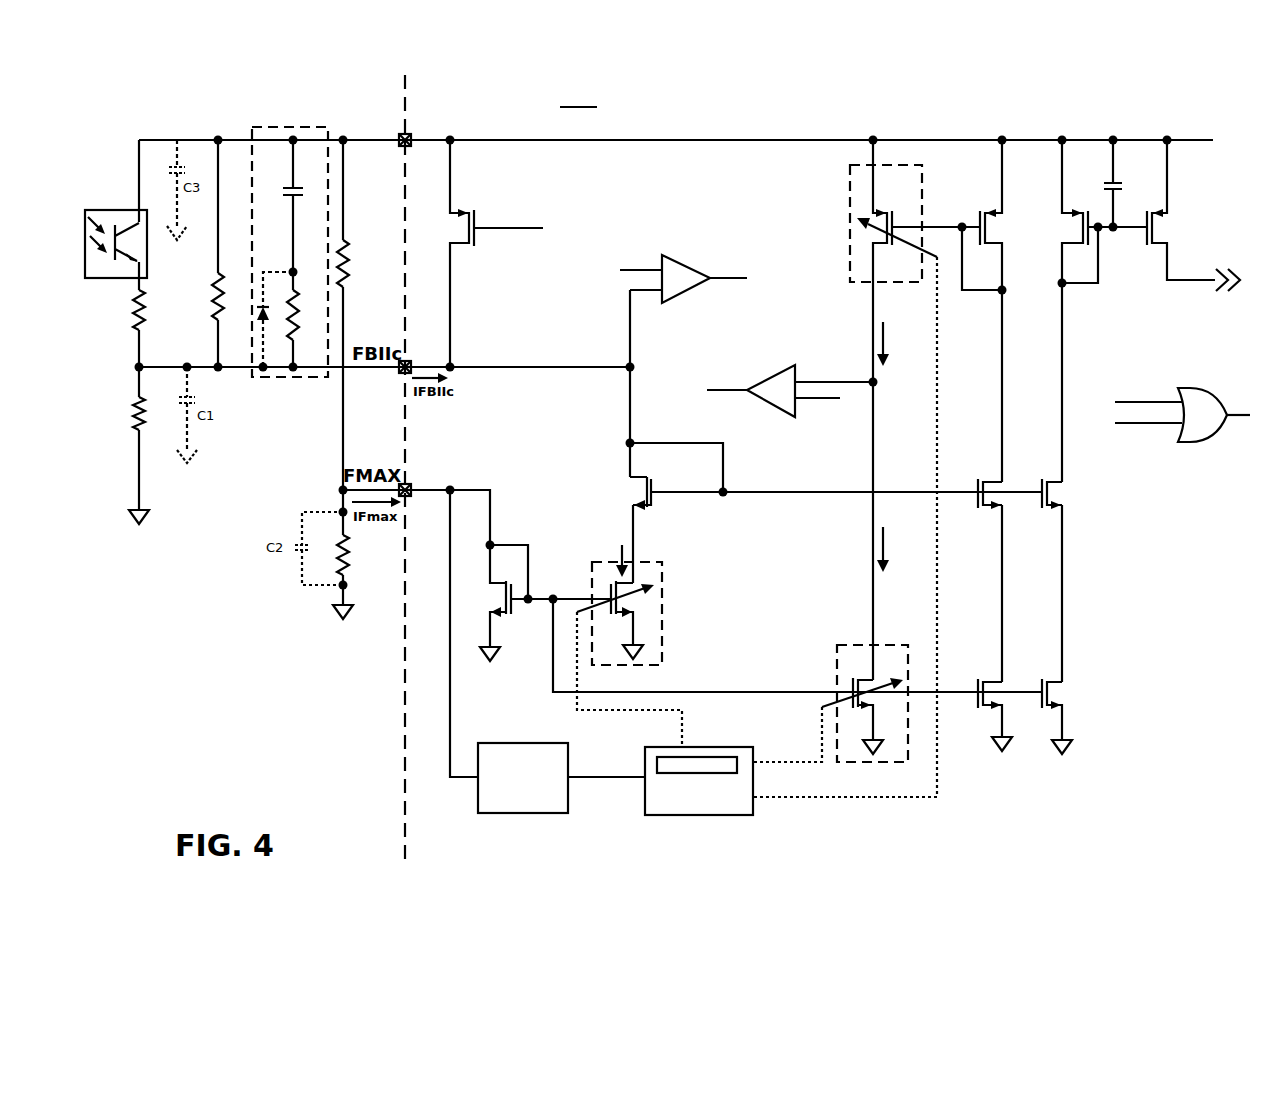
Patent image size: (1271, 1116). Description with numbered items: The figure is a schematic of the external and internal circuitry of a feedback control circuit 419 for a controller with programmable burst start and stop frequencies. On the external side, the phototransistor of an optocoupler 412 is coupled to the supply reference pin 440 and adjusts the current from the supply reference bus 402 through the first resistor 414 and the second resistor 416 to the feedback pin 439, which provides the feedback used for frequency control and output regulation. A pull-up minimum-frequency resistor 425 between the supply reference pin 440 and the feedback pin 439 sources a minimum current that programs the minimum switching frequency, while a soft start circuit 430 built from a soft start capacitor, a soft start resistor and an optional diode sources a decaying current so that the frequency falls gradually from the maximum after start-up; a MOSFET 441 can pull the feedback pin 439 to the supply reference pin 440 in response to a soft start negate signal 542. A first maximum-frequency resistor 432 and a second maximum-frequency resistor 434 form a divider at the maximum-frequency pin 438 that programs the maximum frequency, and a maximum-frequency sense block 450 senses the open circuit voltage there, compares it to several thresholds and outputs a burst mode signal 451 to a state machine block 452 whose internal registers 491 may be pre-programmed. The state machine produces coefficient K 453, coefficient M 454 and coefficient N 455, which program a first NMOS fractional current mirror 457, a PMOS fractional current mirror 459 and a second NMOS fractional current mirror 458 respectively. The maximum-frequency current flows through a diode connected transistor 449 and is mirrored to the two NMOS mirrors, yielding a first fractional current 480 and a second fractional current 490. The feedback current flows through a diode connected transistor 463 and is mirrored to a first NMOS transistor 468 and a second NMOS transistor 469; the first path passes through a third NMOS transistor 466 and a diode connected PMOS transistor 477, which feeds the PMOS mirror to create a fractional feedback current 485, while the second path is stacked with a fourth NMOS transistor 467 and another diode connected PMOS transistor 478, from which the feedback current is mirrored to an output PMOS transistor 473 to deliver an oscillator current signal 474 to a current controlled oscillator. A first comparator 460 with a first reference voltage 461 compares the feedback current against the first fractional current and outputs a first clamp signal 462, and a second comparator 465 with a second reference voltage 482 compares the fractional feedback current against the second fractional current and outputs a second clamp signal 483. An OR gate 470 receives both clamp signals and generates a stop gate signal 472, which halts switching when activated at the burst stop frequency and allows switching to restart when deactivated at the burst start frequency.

The VDDREF bus 402 is at (792, 118).
The optocoupler 412 is at (100, 208).
The resistor R1 414 is at (132, 328).
The resistor R2 416 is at (130, 425).
The feedback control circuit 419 is at (579, 97).
The resistor RFMIN 425 is at (205, 290).
The soft start circuit 430 is at (304, 124).
The resistor RFMAX1 432 is at (352, 270).
The resistor RFMAX2 434 is at (353, 558).
The FMAX pin 438 is at (410, 482).
The FBllc pin 439 is at (410, 358).
The VDDREF pin 440 is at (410, 133).
The MOSFET 441 is at (463, 208).
The diode connected transistor 449 is at (517, 617).
The FMAX sense block 450 is at (524, 815).
The burst mode bm x:y signal 451 is at (596, 783).
The state machine block 452 is at (736, 818).
The K 453 is at (615, 738).
The M 454 is at (785, 802).
The N 455 is at (776, 728).
The NMOS fractional current mirror 457 is at (666, 562).
The NMOS fractional current mirror 458 is at (862, 640).
The PMOS fractional current mirror 459 is at (858, 284).
The comparator 460 is at (690, 260).
The reference voltage VREF1 461 is at (632, 248).
The clamp_1 signal 462 is at (750, 252).
The diode connected transistor 463 is at (648, 466).
The comparator 465 is at (776, 368).
The NMOS transistor 466 is at (1006, 707).
The NMOS transistor 467 is at (1066, 707).
The NMOS transistor 468 is at (1006, 512).
The NMOS transistor 469 is at (1062, 508).
The OR gate 470 is at (1186, 388).
The stop gate signal 472 is at (1226, 370).
The output PMOS transistor 473 is at (1172, 230).
The I_llc signal 474 is at (1178, 304).
The diode connected PMOS transistor 477 is at (1010, 220).
The diode connected PMOS transistor 478 is at (1075, 203).
The fractional current IFmax/K 480 is at (608, 534).
The reference voltage VREF2 482 is at (838, 422).
The clamp_2 signal 483 is at (724, 368).
The fractional current IFBllc/M 485 is at (870, 330).
The fractional current IFmax/N 490 is at (870, 536).
The internal registers 491 is at (658, 775).
The SS_n signal 542 is at (516, 205).